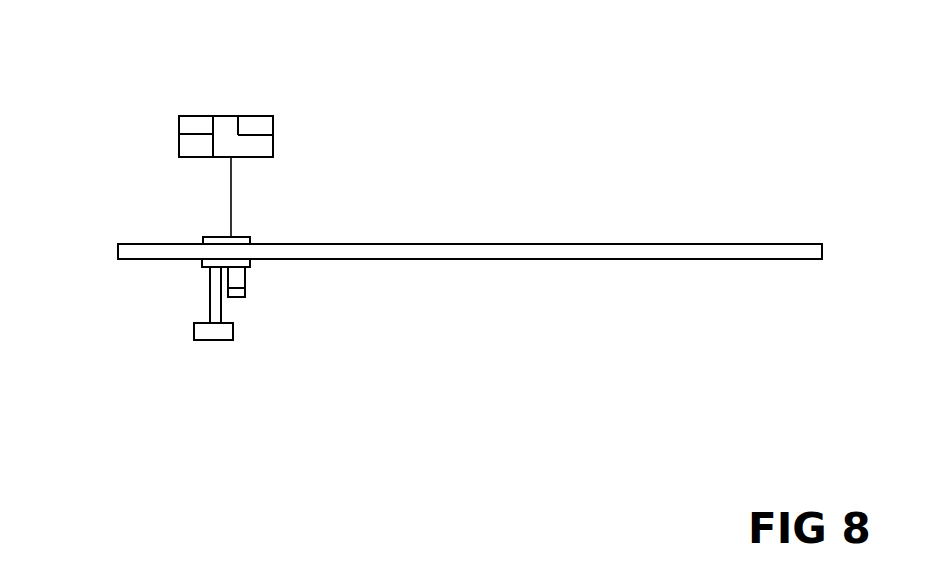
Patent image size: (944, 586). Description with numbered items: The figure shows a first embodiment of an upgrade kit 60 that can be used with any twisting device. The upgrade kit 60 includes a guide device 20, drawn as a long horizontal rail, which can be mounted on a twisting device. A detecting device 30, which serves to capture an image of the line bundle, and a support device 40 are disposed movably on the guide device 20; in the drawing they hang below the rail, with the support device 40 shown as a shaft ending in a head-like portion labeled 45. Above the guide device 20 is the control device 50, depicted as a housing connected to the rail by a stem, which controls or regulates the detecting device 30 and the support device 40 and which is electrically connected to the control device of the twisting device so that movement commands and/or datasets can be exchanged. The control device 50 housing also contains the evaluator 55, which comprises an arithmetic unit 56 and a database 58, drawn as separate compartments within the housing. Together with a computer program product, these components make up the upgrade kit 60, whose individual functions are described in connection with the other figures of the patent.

The guide device 20 is at (725, 238).
The detecting device 30 is at (270, 290).
The support device 40 is at (190, 290).
The bolt head 45 is at (225, 340).
The control device 50 is at (263, 120).
The evaluator 55 is at (227, 122).
The arithmetic unit 56 is at (190, 120).
The database 58 is at (185, 145).
The upgrade kit 60 is at (110, 127).